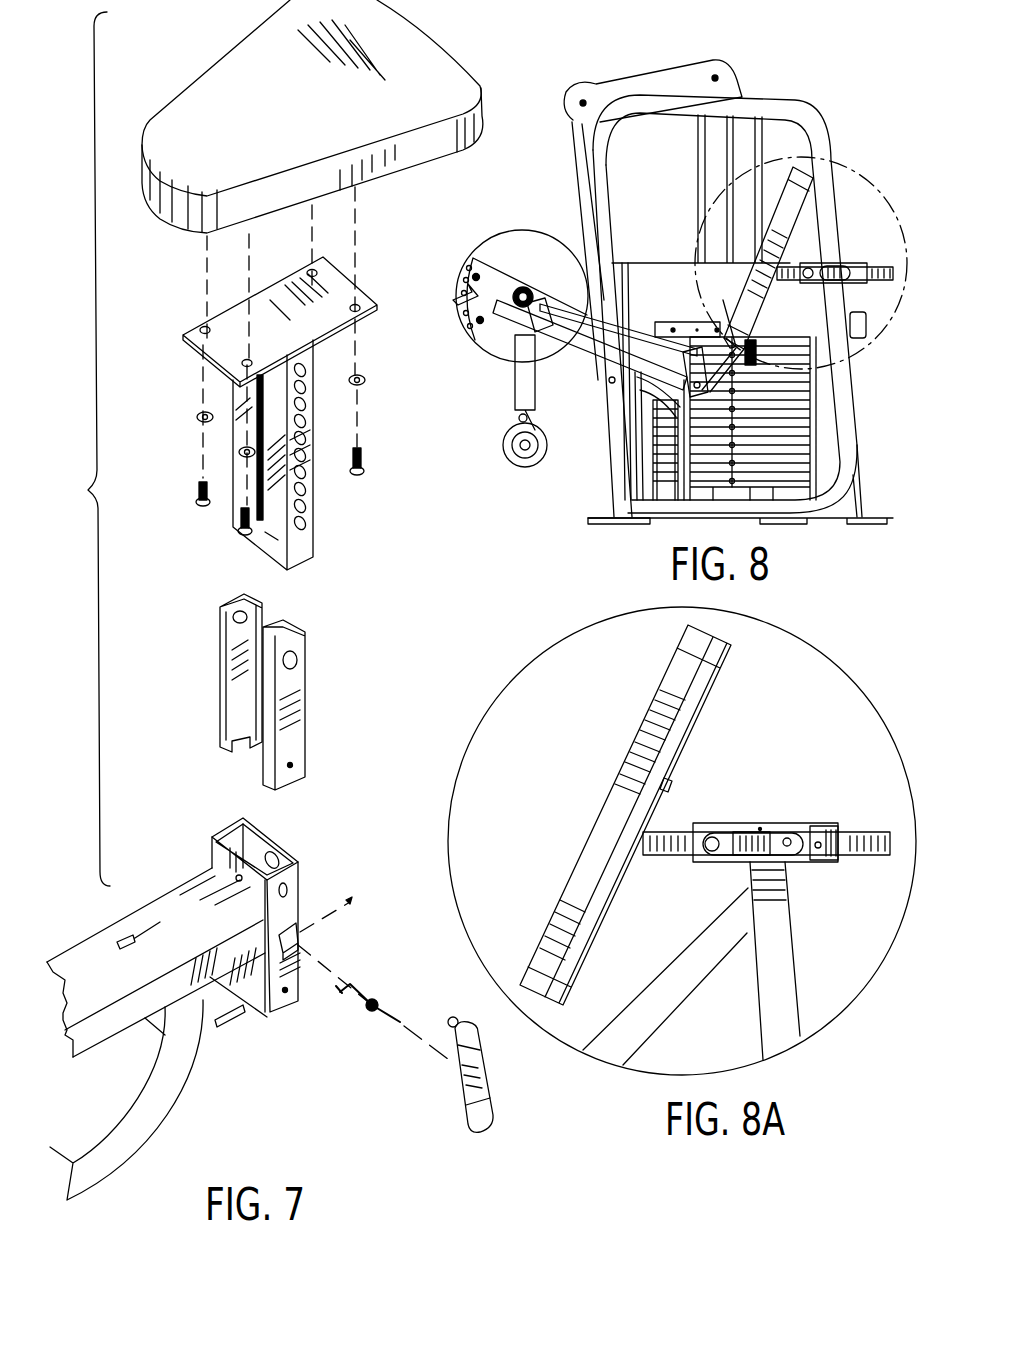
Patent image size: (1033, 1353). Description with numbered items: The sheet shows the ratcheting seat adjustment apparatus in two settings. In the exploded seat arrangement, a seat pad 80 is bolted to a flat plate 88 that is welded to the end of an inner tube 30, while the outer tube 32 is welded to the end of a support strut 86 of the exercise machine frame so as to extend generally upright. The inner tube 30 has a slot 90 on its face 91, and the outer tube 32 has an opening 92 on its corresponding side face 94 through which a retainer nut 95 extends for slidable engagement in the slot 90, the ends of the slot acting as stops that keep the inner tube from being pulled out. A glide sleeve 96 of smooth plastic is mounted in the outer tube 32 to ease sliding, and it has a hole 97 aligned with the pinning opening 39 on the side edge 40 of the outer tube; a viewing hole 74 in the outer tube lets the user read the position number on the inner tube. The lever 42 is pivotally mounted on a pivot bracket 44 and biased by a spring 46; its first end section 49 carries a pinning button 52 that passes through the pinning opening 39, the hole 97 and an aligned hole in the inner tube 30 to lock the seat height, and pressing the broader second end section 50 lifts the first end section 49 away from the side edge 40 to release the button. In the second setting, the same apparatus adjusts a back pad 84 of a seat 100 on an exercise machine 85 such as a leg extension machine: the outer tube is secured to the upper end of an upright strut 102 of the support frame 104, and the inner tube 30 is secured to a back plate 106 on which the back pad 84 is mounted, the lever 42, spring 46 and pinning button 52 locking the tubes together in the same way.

In FIG. 7, the seat pad 80 is at (223, 67).
In FIG. 7, the flat plate 88 is at (227, 320).
In FIG. 7, the inner tube 30 is at (315, 513).
In FIG. 8, the inner tube 30 is at (868, 324).
In FIG. 8A, the inner tube 30 is at (668, 848).
In FIG. 7, the slot 90 is at (257, 497).
In FIG. 7, the face 91 is at (280, 543).
In FIG. 7, the glide sleeve 96 is at (297, 642).
In FIG. 7, the hole 97 is at (297, 662).
In FIG. 7, the side face 94 is at (226, 857).
In FIG. 7, the viewing hole 74 is at (274, 853).
In FIG. 7, the outer tube 32 is at (299, 862).
In FIG. 8, the outer tube 32 is at (868, 262).
In FIG. 8A, the outer tube 32 is at (832, 863).
In FIG. 7, the pinning opening 39 is at (300, 881).
In FIG. 7, the pivot bracket 44 is at (300, 938).
In FIG. 7, the opening 92 is at (237, 876).
In FIG. 7, the retainer nut 95 is at (131, 934).
In FIG. 7, the support strut 86 is at (128, 1018).
In FIG. 7, the spring 46 is at (370, 1012).
In FIG. 7, the lever 42 is at (491, 1082).
In FIG. 8, the lever 42 is at (815, 281).
In FIG. 8A, the lever 42 is at (736, 835).
In FIG. 7, the pinning button 52 is at (450, 1018).
In FIG. 8, the upright strut 102 is at (852, 388).
In FIG. 8A, the upright strut 102 is at (783, 935).
In FIG. 8, the back pad 84 is at (780, 226).
In FIG. 8A, the back pad 84 is at (646, 735).
In FIG. 8, the seat 100 is at (644, 318).
In FIG. 8, the exercise machine 85 is at (569, 208).
In FIG. 8, the support frame 104 is at (668, 525).
In FIG. 8A, the back plate 106 is at (671, 788).
In FIG. 8A, the first end section 49 is at (714, 851).
In FIG. 8A, the second end section 50 is at (788, 838).
In FIG. 8A, the side edge 40 is at (815, 832).